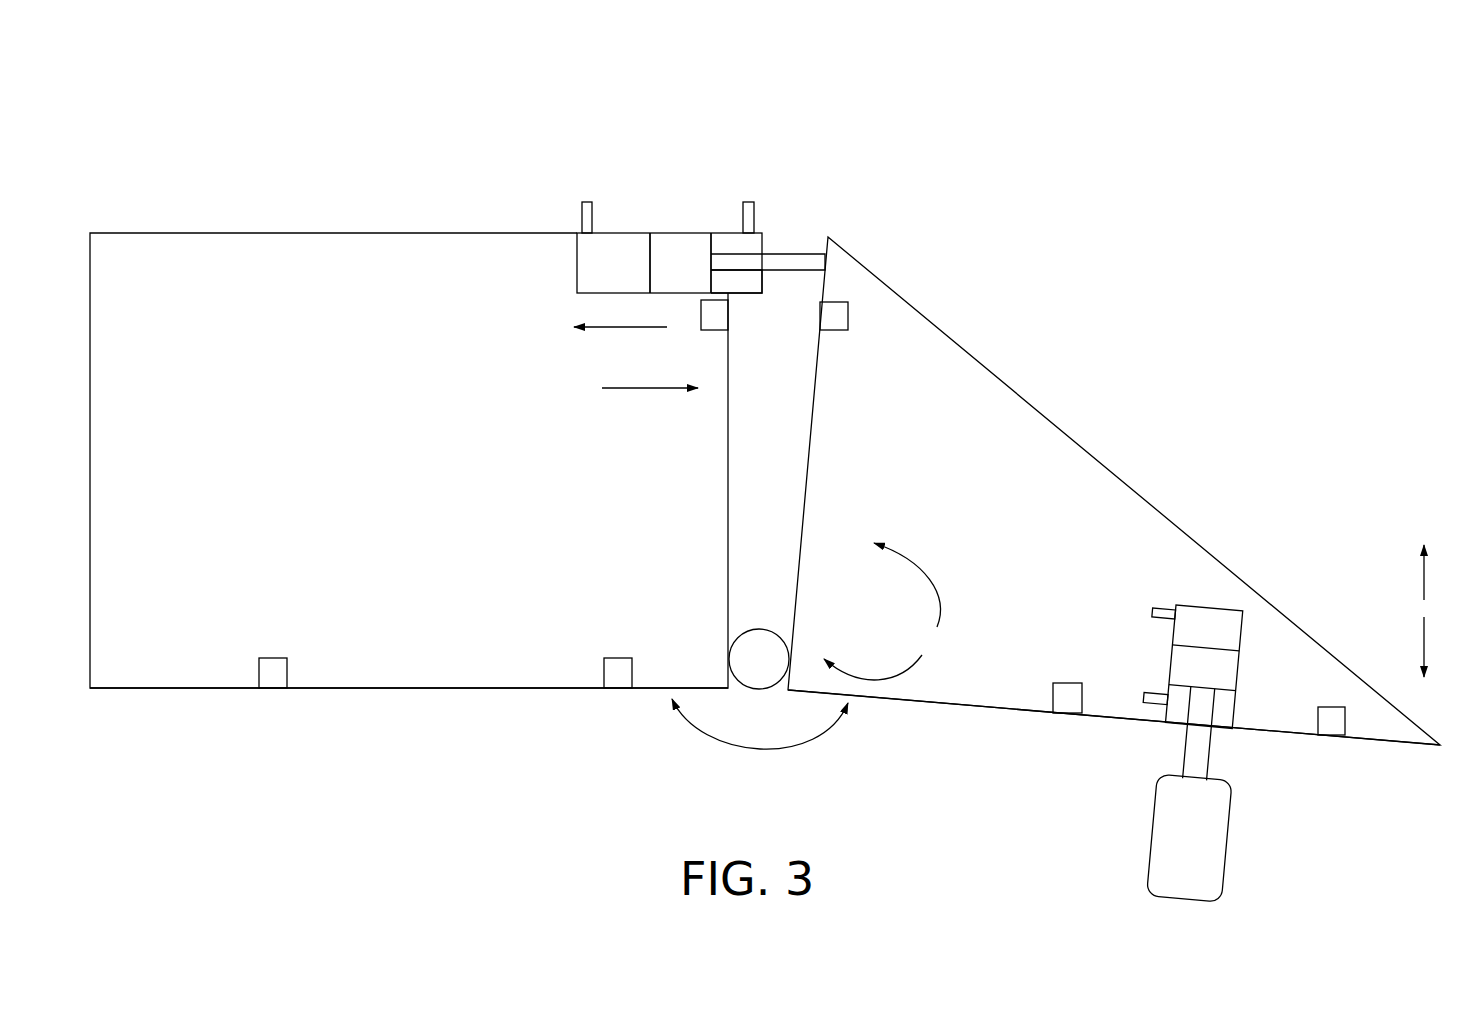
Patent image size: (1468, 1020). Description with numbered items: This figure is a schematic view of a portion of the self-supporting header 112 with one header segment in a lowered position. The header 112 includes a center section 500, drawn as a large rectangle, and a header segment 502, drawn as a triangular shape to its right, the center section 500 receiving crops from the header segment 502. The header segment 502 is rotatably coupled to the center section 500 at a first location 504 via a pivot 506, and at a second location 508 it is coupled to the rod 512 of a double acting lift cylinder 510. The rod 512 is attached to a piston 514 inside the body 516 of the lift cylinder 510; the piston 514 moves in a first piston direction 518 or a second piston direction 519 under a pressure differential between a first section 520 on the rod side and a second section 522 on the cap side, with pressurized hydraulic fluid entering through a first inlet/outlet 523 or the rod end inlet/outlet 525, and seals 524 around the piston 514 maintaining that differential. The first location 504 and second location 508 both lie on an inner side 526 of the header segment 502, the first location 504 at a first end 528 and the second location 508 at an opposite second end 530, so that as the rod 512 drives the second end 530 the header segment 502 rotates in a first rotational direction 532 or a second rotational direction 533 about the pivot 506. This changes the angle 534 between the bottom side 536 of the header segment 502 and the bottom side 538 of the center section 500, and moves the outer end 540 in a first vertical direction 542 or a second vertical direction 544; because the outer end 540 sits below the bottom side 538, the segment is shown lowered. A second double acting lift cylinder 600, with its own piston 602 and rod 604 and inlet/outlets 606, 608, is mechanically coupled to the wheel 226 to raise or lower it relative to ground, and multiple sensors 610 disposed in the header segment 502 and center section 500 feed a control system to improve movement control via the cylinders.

The self-supporting header 112 is at (1341, 125).
The wheel 226 is at (1155, 830).
The center section 500 is at (213, 233).
The header segment 502 is at (977, 376).
The first location 504 is at (805, 652).
The pivot 506 is at (758, 660).
The second location 508 is at (836, 266).
The double acting lift cylinder 510 is at (733, 198).
The rod 512 is at (797, 254).
The piston 514 is at (674, 240).
The body 516 is at (577, 262).
The first piston direction 518 is at (623, 327).
The second piston direction 519 is at (640, 388).
The first section 520 is at (753, 282).
The second section 522 is at (620, 240).
The first inlet/outlet 523 is at (580, 217).
The seals 524 is at (700, 233).
The inlet/outlet 525 is at (755, 215).
The inner side 526 is at (822, 473).
The first end 528 is at (872, 726).
The second end 530 is at (951, 248).
The first rotational direction 532 is at (930, 570).
The second rotational direction 533 is at (920, 676).
The angle 534 is at (757, 755).
The bottom side of the header segment 536 is at (1114, 720).
The bottom side of the center section 538 is at (408, 688).
The outer end 540 is at (1440, 757).
The first vertical direction 542 is at (1424, 578).
The second vertical direction 544 is at (1424, 640).
The second double acting lift cylinder 600 is at (1249, 686).
The piston 602 is at (1177, 665).
The rod 604 is at (1212, 752).
The inlet/outlet 606 is at (1163, 610).
The inlet/outlet 608 is at (1160, 698).
The sensors 610 is at (272, 658).